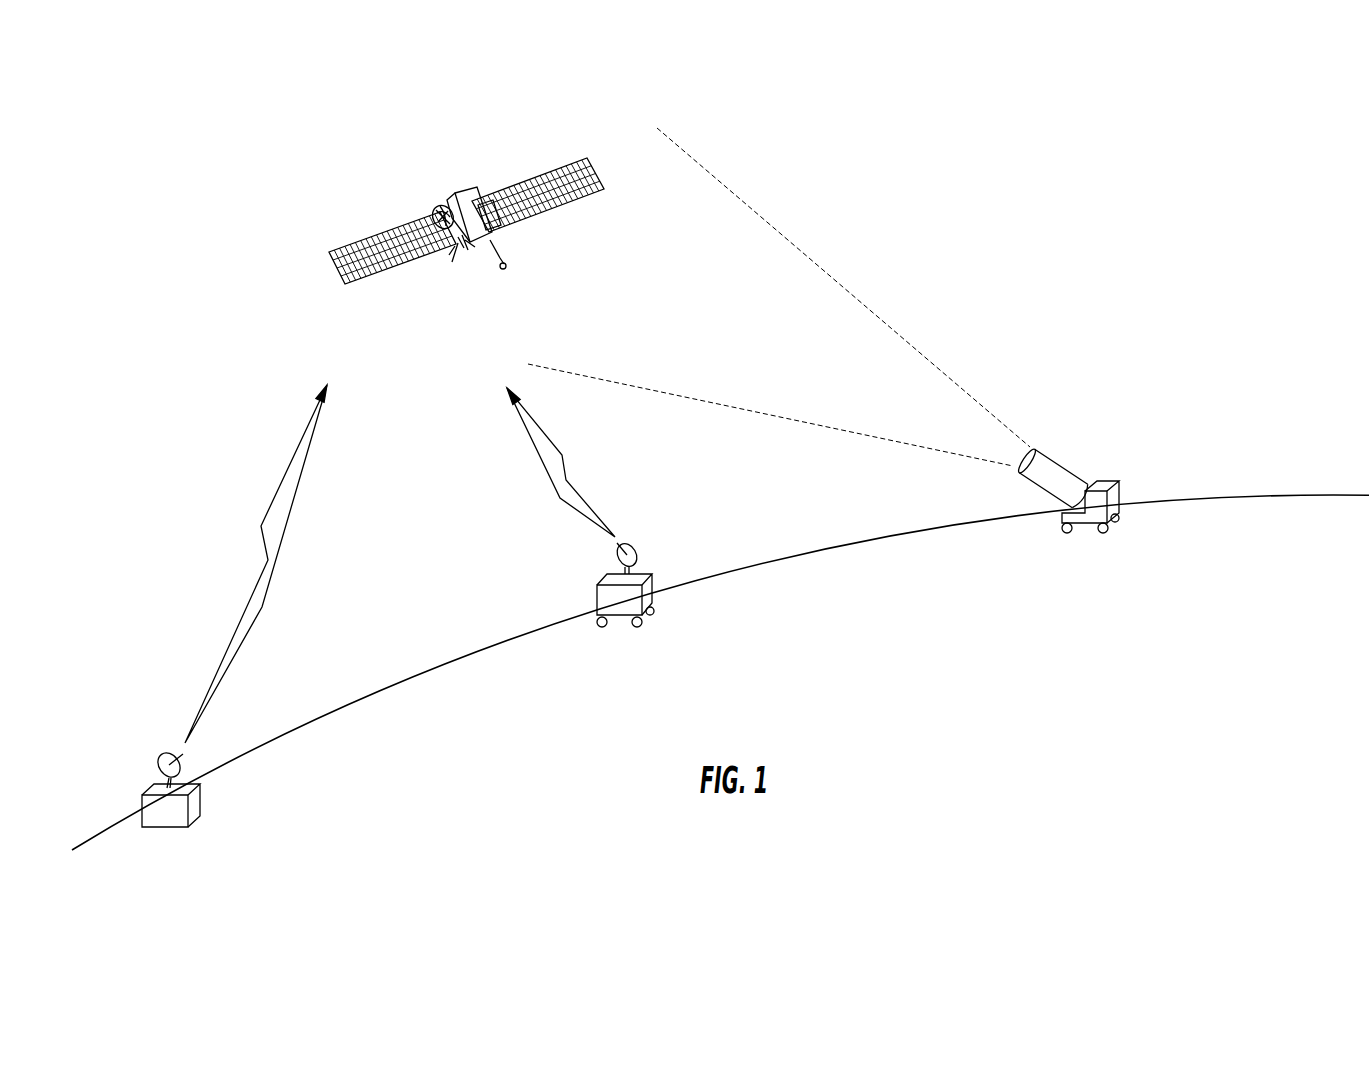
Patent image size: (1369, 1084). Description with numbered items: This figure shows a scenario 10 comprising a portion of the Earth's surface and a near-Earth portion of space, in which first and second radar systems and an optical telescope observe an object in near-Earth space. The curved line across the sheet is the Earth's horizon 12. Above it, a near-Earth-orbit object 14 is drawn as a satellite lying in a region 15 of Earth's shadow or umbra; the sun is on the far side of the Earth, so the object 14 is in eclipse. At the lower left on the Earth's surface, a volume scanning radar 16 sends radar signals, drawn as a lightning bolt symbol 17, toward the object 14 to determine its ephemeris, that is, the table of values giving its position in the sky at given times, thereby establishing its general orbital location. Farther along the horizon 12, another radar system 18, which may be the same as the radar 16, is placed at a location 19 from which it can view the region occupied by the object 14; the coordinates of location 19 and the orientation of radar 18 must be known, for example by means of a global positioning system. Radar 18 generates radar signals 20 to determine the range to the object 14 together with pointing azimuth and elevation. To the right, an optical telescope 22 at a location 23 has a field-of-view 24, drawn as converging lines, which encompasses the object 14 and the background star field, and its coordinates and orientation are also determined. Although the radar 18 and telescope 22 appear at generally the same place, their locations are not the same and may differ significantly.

The satellite communication system 10 is at (986, 146).
The Earth's horizon 12 is at (1328, 492).
The near-Earth-orbit object 14 is at (466, 193).
The region of Earth's shadow 15 is at (466, 223).
The volume scanning radar 16 is at (199, 802).
The radar signals 17 is at (302, 472).
The radar system 18 is at (655, 588).
The location 19 is at (657, 606).
The radar signals 20 is at (542, 467).
The optical telescope 22 is at (1120, 493).
The location 23 is at (1100, 506).
The field-of-view 24 is at (973, 392).